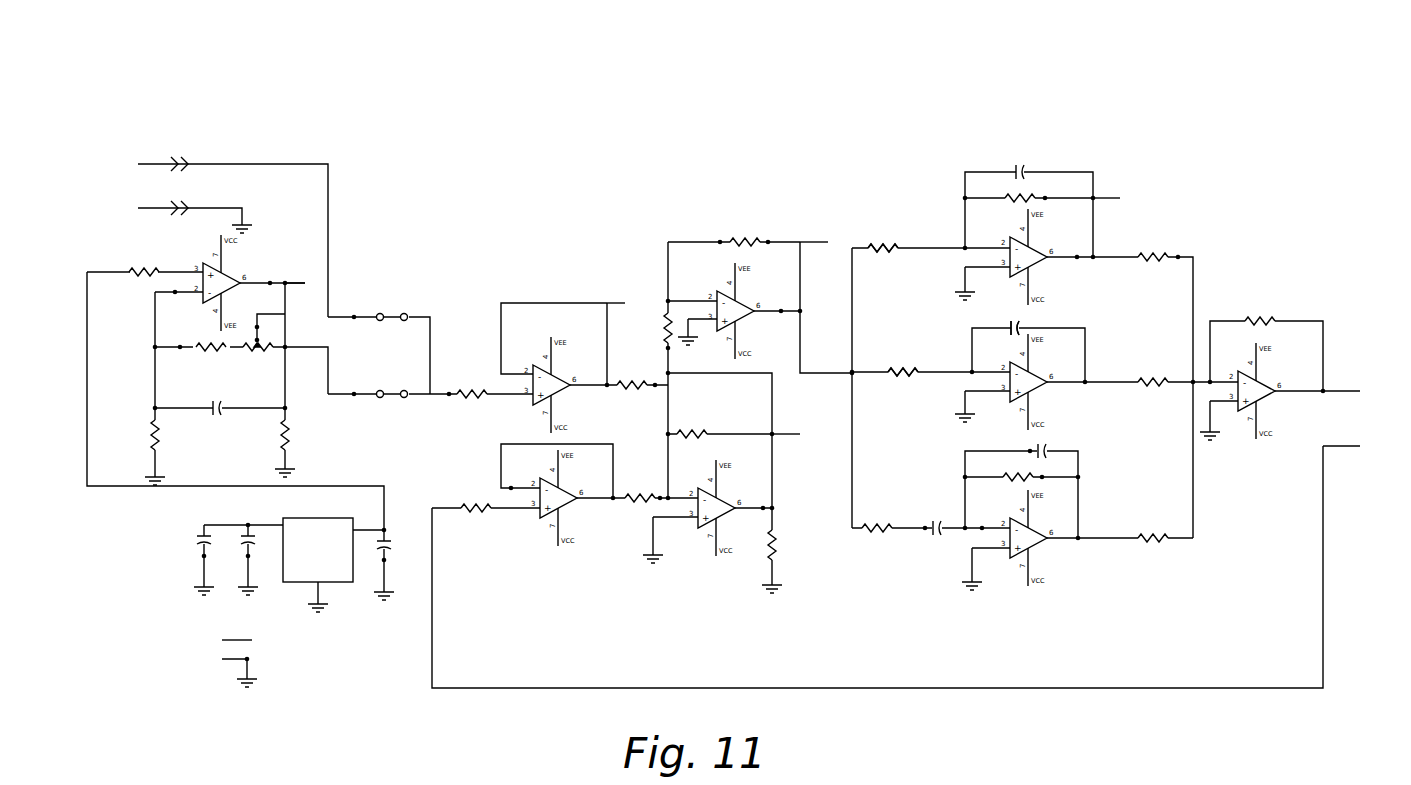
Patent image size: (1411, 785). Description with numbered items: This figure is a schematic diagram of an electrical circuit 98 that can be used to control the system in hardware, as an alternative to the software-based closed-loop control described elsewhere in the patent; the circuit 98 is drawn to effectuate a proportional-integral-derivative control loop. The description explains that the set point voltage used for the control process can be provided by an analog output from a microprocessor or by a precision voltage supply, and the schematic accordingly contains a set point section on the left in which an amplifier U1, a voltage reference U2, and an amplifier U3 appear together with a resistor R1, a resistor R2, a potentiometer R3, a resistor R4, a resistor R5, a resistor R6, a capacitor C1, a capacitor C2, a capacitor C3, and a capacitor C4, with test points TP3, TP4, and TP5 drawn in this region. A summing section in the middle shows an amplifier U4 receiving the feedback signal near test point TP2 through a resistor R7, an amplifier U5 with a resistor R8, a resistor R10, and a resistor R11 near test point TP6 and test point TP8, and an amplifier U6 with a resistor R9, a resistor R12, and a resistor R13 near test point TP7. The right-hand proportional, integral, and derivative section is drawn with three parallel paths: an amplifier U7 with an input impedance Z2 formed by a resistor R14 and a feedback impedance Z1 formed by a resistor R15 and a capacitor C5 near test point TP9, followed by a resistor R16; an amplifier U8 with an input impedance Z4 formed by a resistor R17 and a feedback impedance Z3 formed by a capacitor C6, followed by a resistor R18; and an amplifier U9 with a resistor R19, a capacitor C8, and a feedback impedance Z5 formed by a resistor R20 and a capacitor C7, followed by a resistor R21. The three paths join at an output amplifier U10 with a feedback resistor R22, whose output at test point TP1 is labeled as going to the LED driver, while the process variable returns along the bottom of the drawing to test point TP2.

The electrical circuit 98 is at (1213, 89).
The setpoint buffer amplifier U1 is at (233, 283).
The 2.5 V voltage reference U2 is at (318, 540).
The setpoint follower amplifier U3 is at (563, 385).
The feedback follower amplifier U4 is at (570, 498).
The summing amplifier U5 is at (747, 311).
The inverting amplifier U6 is at (728, 508).
The proportional amplifier U7 is at (1041, 257).
The integral amplifier U8 is at (1041, 382).
The differential amplifier U9 is at (1041, 538).
The output amplifier to LED driver U10 is at (1269, 391).
The proportional feedback impedance Z1 is at (1029, 185).
The proportional input impedance Z2 is at (883, 230).
The integral feedback impedance Z3 is at (1041, 334).
The integral input impedance Z4 is at (903, 352).
The differential feedback impedance Z5 is at (1021, 464).
The test point 1 TP1 is at (1341, 382).
The test point 2 TP2 is at (897, 473).
The test point 3 TP3 is at (235, 641).
The test point 4 TP4 is at (229, 671).
The test point 5 TP5 is at (295, 275).
The test point 6 TP6 is at (620, 295).
The test point 7 TP7 is at (794, 436).
The test point 8 TP8 is at (817, 236).
The test point 9 TP9 is at (1115, 200).
The resistor R1 is at (143, 271).
The resistor R2 is at (210, 346).
The potentiometer R3 is at (258, 353).
The resistor R4 is at (140, 435).
The resistor R5 is at (298, 433).
The resistor R6 is at (471, 393).
The resistor R7 is at (476, 505).
The resistor R8 is at (632, 386).
The resistor R9 is at (640, 496).
The resistor R10 is at (658, 324).
The resistor R11 is at (745, 241).
The resistor R12 is at (692, 433).
The resistor R13 is at (759, 545).
The resistor R14 is at (883, 249).
The resistor R15 is at (1020, 198).
The resistor R16 is at (1153, 257).
The resistor R17 is at (904, 371).
The resistor R18 is at (1153, 382).
The resistor R19 is at (877, 527).
The resistor R20 is at (1018, 477).
The resistor R21 is at (1153, 538).
The resistor R22 is at (1260, 320).
The capacitor C1 is at (217, 407).
The capacitor C2 is at (216, 545).
The capacitor C3 is at (260, 545).
The capacitor C4 is at (396, 551).
The capacitor C5 is at (1028, 166).
The capacitor C6 is at (1018, 323).
The capacitor C7 is at (1044, 446).
The capacitor C8 is at (936, 528).